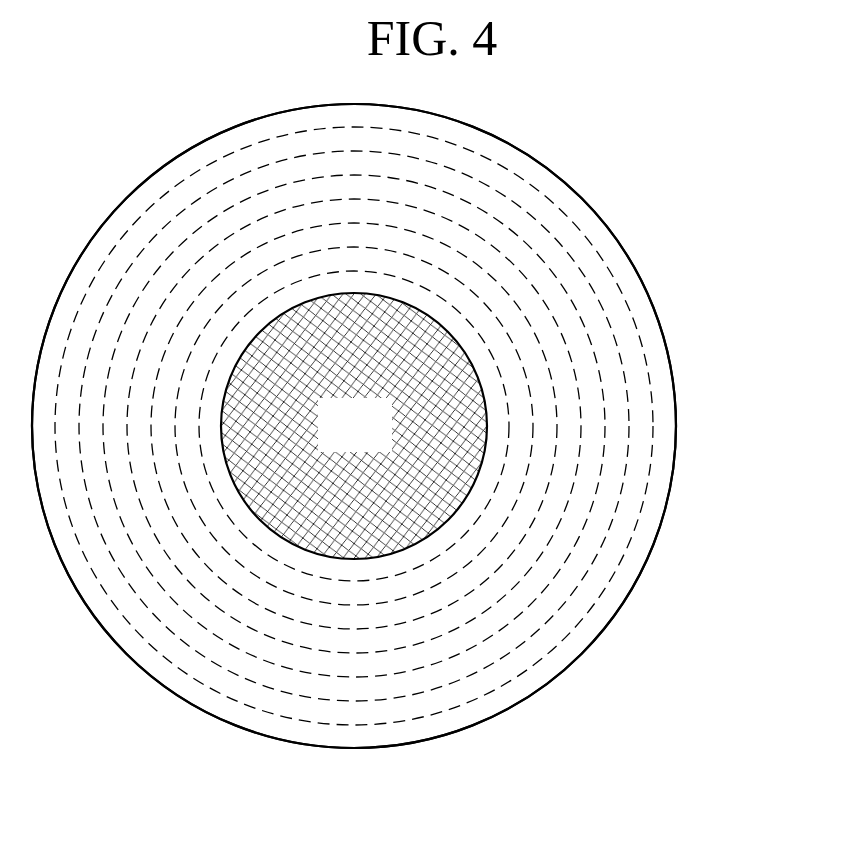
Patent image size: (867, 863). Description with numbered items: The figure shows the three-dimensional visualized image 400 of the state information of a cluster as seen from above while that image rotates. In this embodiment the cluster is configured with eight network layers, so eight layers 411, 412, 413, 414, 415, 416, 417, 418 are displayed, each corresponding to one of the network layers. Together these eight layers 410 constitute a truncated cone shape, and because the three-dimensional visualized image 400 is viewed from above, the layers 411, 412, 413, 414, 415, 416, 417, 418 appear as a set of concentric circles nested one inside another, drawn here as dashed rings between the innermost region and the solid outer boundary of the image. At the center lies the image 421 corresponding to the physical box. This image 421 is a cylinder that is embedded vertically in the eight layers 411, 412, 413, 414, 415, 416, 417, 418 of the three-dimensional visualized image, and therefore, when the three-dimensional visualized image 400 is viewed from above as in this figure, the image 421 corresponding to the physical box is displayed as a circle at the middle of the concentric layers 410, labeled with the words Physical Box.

The three-dimensional visualized image 400 is at (319, 750).
The layers 410 is at (393, 458).
The first layer 411 is at (365, 568).
The second layer 412 is at (399, 593).
The third layer 413 is at (438, 602).
The fourth layer 414 is at (487, 590).
The fifth layer 415 is at (528, 590).
The sixth layer 416 is at (577, 578).
The seventh layer 417 is at (623, 537).
The eighth layer 418 is at (387, 426).
The image corresponding to the physical box 421 is at (450, 355).